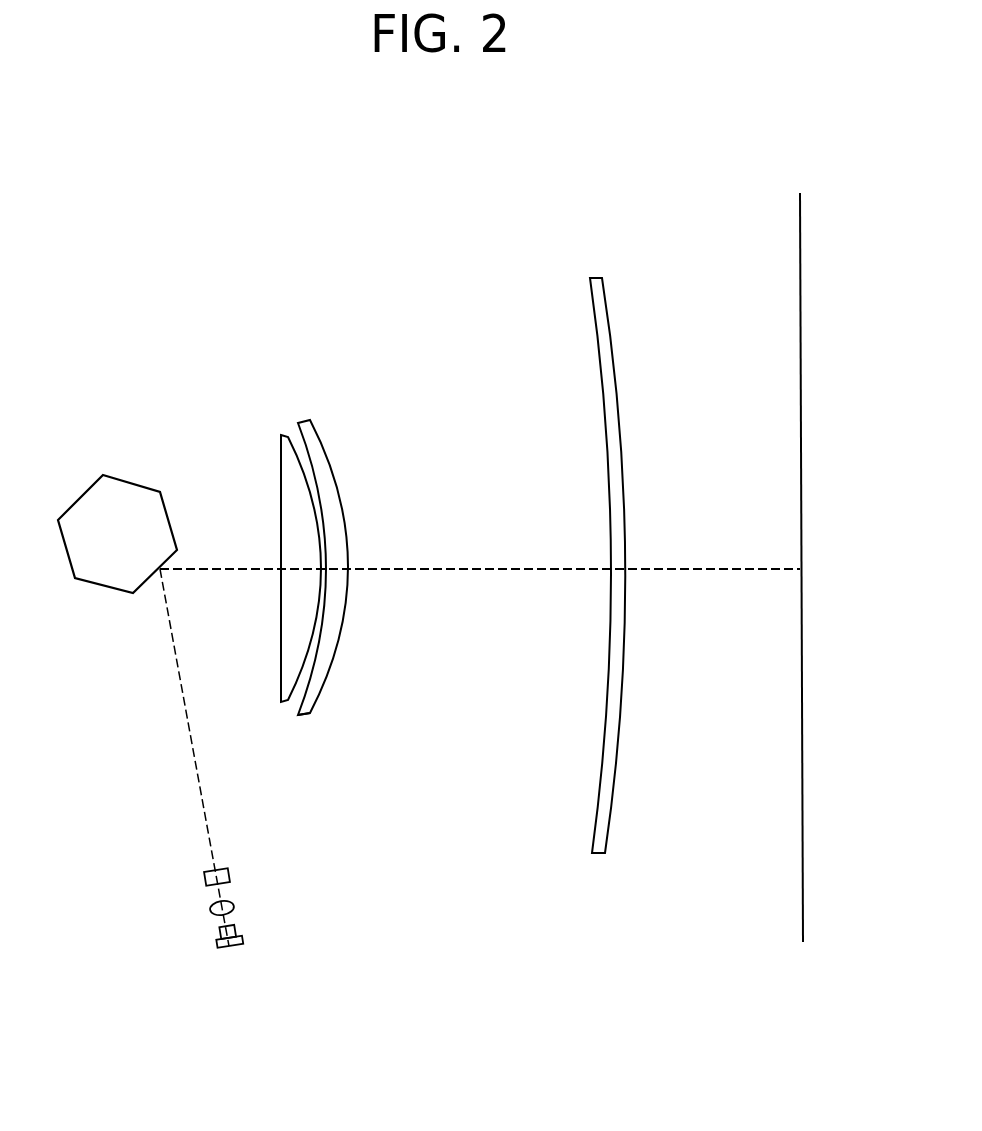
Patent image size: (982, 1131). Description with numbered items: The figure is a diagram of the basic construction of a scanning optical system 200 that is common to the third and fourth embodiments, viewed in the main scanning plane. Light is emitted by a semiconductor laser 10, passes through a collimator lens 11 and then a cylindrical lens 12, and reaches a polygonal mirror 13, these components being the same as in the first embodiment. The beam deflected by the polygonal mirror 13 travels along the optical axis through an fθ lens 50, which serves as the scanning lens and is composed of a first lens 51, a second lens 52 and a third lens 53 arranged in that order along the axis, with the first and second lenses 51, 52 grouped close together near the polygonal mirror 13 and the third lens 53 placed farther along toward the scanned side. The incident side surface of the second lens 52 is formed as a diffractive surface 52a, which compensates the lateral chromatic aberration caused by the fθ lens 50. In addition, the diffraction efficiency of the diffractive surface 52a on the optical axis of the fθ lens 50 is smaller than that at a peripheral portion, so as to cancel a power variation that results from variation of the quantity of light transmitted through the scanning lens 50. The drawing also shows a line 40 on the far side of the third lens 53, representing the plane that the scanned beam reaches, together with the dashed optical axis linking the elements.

The semiconductor laser 10 is at (220, 936).
The collimator lens 11 is at (211, 906).
The cylindrical lens 12 is at (203, 874).
The polygonal mirror 13 is at (105, 583).
The screen 40 is at (800, 209).
The fθ lens 50 is at (596, 220).
The first lens 51 is at (288, 438).
The second lens 52 is at (306, 421).
The diffractive surface 52a is at (298, 697).
The third lens 53 is at (597, 291).
The scanning optical system 200 is at (413, 887).